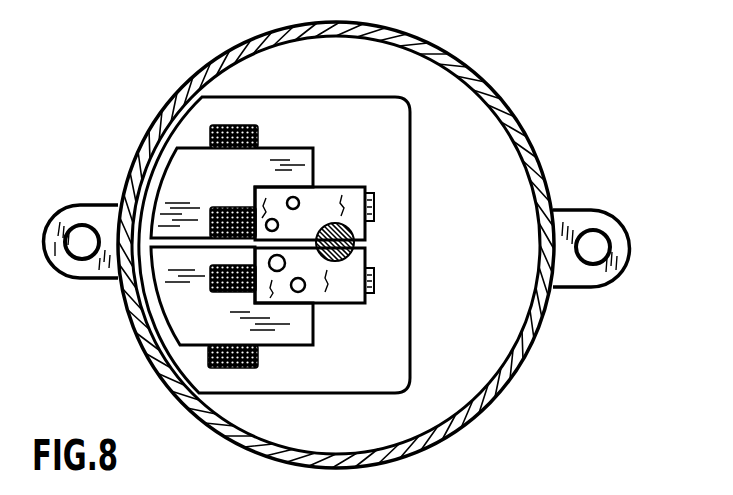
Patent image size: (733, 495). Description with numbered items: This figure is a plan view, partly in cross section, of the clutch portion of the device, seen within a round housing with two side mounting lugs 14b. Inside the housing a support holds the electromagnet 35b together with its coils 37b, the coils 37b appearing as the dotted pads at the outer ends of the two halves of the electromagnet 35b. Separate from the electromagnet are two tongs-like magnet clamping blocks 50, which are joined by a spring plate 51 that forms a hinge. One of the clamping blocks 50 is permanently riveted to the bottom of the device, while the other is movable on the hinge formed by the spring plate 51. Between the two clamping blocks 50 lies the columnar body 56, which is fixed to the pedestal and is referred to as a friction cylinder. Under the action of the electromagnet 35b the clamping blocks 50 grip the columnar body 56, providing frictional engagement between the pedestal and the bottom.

The mounting lug 14b is at (74, 205).
The electromagnet 35b is at (243, 183).
The coils 37b is at (241, 126).
The magnet clamping blocks 50 is at (323, 193).
The spring plate 51 is at (368, 255).
The columnar body 56 is at (355, 237).